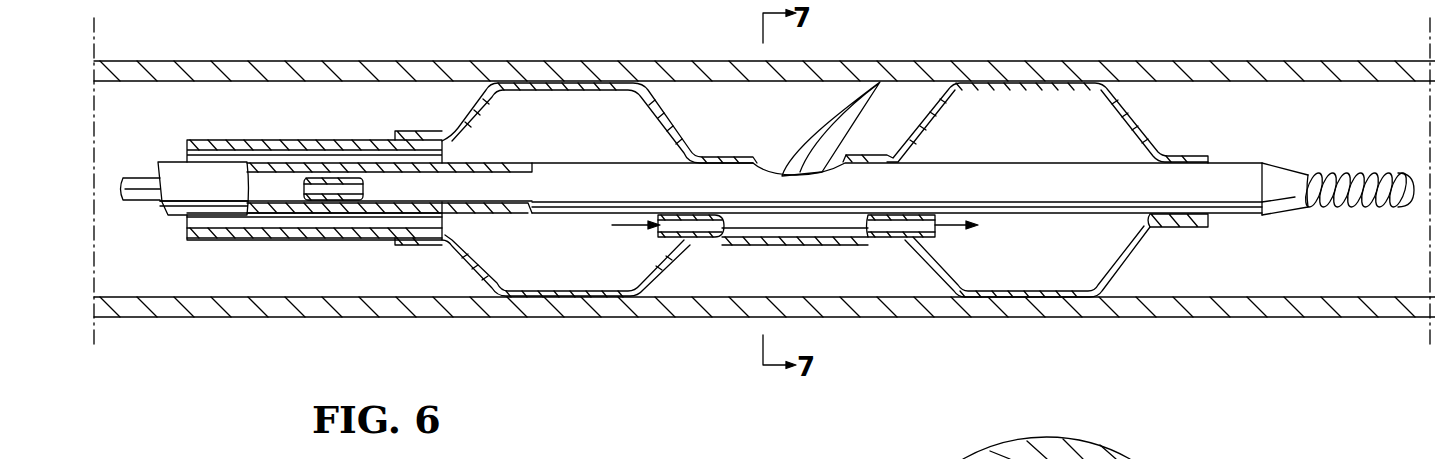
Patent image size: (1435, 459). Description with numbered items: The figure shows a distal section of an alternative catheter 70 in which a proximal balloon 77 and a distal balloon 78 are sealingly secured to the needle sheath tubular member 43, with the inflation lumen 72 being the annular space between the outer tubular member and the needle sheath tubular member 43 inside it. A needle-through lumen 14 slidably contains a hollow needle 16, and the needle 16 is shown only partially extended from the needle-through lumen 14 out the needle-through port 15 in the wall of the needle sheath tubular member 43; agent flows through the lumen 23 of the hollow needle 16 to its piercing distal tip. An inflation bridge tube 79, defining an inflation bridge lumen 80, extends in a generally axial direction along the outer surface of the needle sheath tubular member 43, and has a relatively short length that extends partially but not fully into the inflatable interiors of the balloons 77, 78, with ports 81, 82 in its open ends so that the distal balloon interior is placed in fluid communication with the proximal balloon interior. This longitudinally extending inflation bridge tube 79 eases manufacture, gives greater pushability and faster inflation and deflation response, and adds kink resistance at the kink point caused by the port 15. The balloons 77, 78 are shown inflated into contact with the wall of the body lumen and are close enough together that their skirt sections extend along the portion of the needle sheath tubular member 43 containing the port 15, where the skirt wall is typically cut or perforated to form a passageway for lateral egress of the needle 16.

The catheter 70 is at (184, 96).
The needle-through port 15 is at (772, 163).
The hollow needle 16 is at (277, 187).
The inflation lumen 72 is at (377, 157).
The needle sheath tubular member 43 is at (390, 226).
The needle-through lumen 14 is at (222, 240).
The lumen of the hollow needle 23 is at (330, 187).
The proximal balloon 77 is at (457, 121).
The distal balloon 78 is at (1143, 124).
The inflation bridge tube 79 is at (772, 227).
The inflation bridge lumen 80 is at (880, 238).
The port 81 is at (653, 234).
The port 82 is at (950, 228).